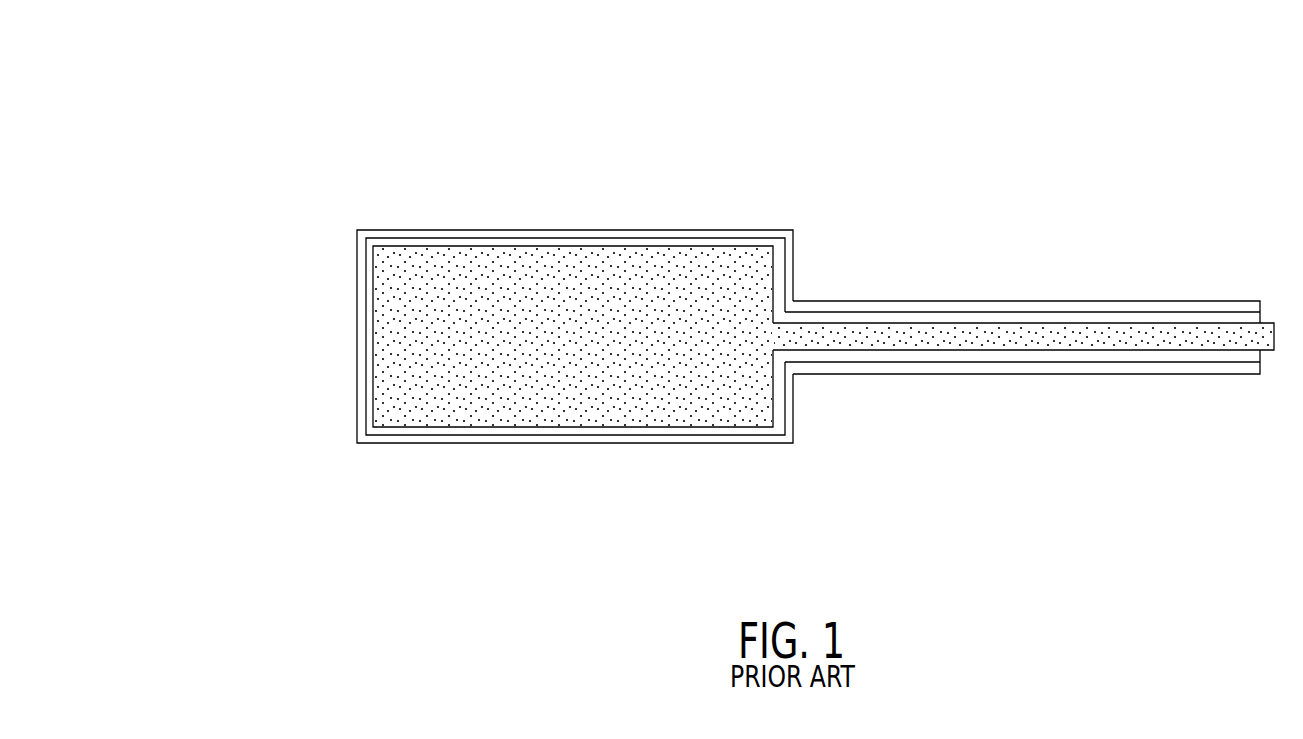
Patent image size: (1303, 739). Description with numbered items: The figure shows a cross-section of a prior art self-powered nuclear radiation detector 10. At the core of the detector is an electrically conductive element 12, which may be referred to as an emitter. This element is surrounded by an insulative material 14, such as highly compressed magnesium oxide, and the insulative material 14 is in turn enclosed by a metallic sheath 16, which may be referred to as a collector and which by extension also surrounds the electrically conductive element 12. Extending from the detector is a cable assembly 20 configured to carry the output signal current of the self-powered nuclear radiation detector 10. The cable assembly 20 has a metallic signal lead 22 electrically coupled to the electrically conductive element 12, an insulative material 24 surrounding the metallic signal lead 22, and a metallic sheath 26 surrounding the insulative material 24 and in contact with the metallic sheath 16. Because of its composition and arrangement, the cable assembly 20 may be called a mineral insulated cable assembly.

The self-powered nuclear radiation detector 10 is at (311, 133).
The electrically conductive element 12 is at (708, 275).
The insulative material 14 is at (678, 246).
The metallic sheath 16 is at (602, 238).
The cable assembly 20 is at (1002, 278).
The metallic signal lead 22 is at (1142, 354).
The insulative material 24 is at (862, 374).
The metallic sheath 26 is at (1027, 368).